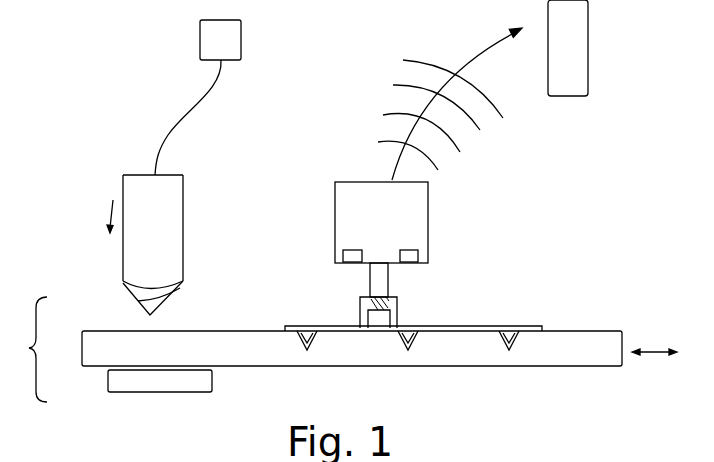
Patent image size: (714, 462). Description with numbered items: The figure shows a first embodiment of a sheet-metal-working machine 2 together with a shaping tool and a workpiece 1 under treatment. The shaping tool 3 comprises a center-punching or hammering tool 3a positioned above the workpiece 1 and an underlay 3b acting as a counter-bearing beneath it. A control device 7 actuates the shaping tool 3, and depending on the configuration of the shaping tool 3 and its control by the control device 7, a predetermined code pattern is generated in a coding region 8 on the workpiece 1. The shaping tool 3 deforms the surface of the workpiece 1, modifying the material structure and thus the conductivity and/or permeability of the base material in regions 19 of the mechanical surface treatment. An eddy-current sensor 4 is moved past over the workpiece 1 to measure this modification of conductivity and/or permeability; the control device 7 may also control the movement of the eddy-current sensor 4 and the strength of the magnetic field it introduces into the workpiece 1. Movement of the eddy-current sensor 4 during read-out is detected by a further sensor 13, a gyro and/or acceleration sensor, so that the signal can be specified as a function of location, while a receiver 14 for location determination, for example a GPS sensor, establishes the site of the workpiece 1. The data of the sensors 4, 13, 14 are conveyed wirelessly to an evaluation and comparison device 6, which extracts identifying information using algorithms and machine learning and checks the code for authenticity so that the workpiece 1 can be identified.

The workpiece 1 is at (596, 345).
The sheet-metal-working machine 2 is at (83, 41).
The shaping tool 3 is at (30, 349).
The center-punching or hammering tool 3a is at (123, 272).
The underlay 3b is at (108, 380).
The eddy-current sensor 4 is at (338, 281).
The evaluation and comparison device 6 is at (572, 44).
The control device 7 is at (225, 42).
The coding region 8 is at (520, 328).
The further sensor 13 is at (352, 250).
The receiver for location determination 14 is at (403, 250).
The regions of the mechanical surface treatment 19 is at (507, 380).